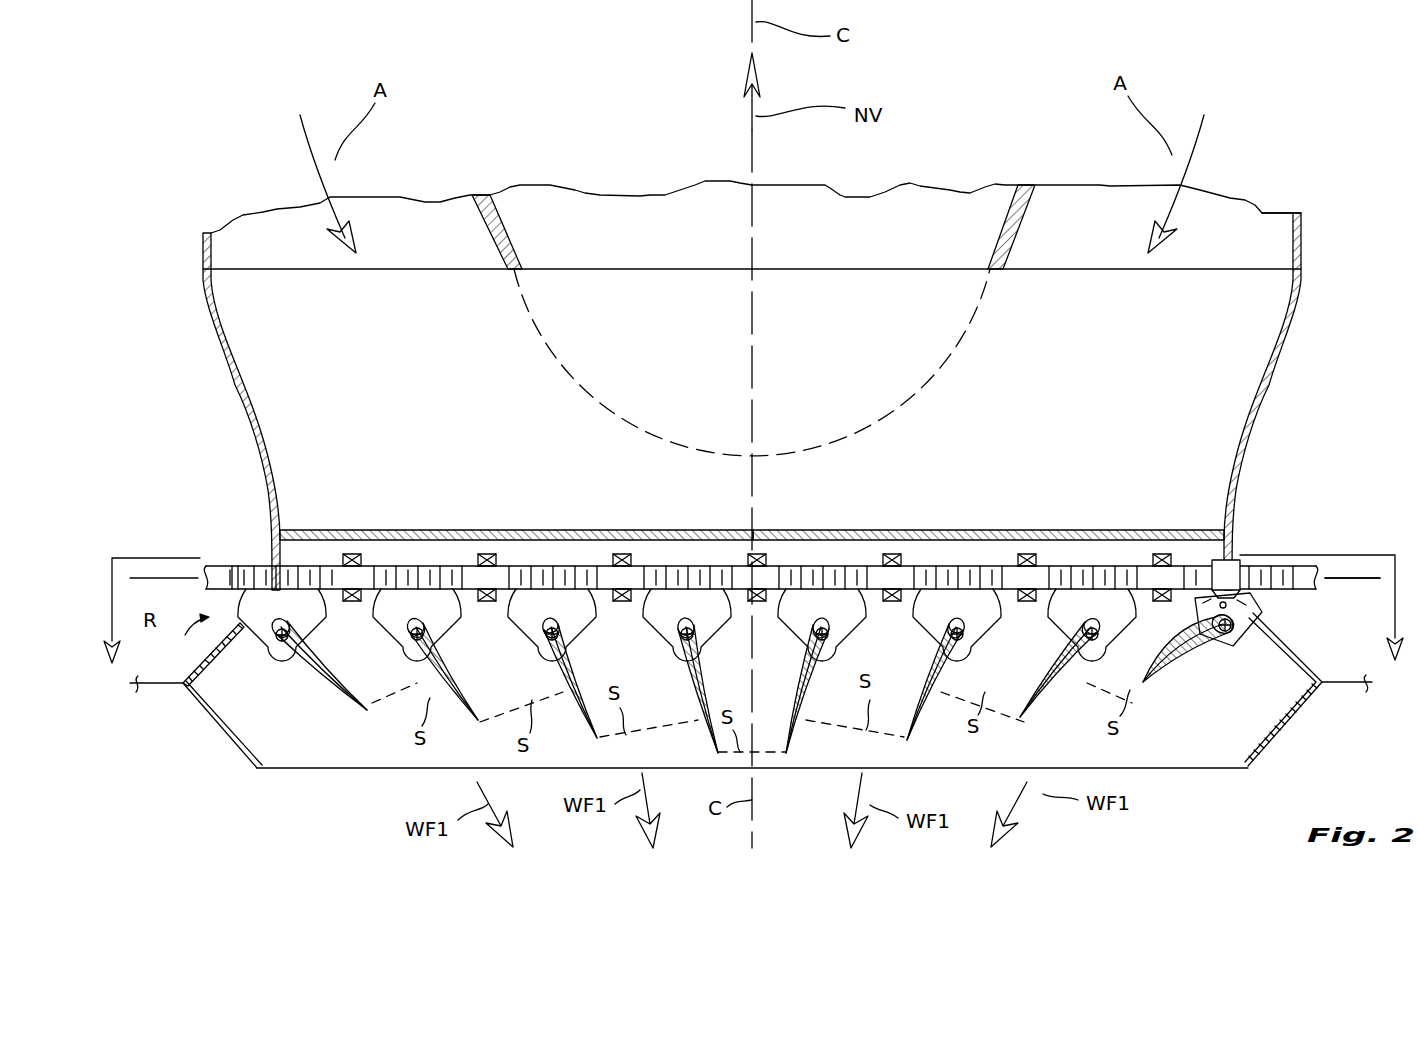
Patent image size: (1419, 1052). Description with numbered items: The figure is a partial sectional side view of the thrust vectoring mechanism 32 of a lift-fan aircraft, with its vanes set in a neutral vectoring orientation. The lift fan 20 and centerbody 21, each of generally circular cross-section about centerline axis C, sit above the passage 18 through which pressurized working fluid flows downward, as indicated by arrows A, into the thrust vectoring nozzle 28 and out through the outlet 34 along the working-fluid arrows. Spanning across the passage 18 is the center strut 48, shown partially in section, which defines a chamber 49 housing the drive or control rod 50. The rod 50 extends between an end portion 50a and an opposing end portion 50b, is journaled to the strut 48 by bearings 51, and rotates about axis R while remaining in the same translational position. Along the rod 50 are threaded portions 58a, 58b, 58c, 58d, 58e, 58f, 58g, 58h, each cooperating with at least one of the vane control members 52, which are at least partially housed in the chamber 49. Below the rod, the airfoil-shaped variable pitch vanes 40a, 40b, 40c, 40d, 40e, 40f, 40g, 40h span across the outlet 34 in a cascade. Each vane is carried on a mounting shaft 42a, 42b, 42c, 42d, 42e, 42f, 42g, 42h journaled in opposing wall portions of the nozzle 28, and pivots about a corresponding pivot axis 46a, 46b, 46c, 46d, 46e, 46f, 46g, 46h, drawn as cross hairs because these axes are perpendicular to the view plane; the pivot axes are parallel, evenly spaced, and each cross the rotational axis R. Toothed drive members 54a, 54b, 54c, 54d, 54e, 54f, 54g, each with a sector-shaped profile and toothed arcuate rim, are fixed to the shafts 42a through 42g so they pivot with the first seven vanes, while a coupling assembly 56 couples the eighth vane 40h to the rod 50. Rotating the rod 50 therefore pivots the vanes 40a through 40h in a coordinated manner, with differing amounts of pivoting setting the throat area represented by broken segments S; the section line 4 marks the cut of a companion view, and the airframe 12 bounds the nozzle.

The section line 4- 4 is at (752, 590).
The engine housing 12 is at (1345, 680).
The passage 18 is at (1268, 328).
The lift fan 20 is at (1235, 267).
The centerbody 21 is at (1008, 210).
The thrust vectoring nozzle 28 is at (1284, 742).
The thrust vectoring mechanism 32 is at (180, 640).
The outlet 34 is at (1172, 770).
The variable pitch vane 40a is at (367, 712).
The variable pitch vane 40b is at (478, 722).
The variable pitch vane 40c is at (598, 741).
The variable pitch vane 40d is at (716, 752).
The variable pitch vane 40e is at (787, 752).
The variable pitch vane 40f is at (906, 740).
The variable pitch vane 40g is at (1020, 719).
The variable pitch vane 40h is at (1143, 685).
The mounting shaft 42a is at (275, 640).
The mounting shaft 42b is at (410, 636).
The mounting shaft 42c is at (545, 636).
The mounting shaft 42d is at (680, 636).
The mounting shaft 42e is at (815, 636).
The mounting shaft 42f is at (950, 634).
The mounting shaft 42g is at (1085, 634).
The mounting shaft 42h is at (1227, 633).
The pivot axis 46a is at (280, 648).
The pivot axis 46b is at (420, 645).
The pivot axis 46c is at (557, 645).
The pivot axis 46d is at (692, 645).
The pivot axis 46e is at (812, 645).
The pivot axis 46f is at (952, 645).
The pivot axis 46g is at (1085, 645).
The pivot axis 46h is at (1216, 635).
The center strut 48 is at (365, 530).
The chamber 49 is at (1132, 530).
The drive or control rod 50 is at (1252, 559).
The end portion 50a is at (1258, 583).
The end portion 50b is at (215, 565).
The bearings 51 is at (351, 553).
The vane control members 52 is at (305, 655).
The toothed drive member 54a is at (282, 625).
The toothed drive member 54b is at (417, 625).
The toothed drive member 54c is at (552, 625).
The toothed drive member 54d is at (687, 625).
The toothed drive member 54e is at (822, 625).
The toothed drive member 54f is at (957, 625).
The toothed drive member 54g is at (1092, 625).
The coupling assembly 56 is at (1242, 627).
The threaded portion 58a is at (253, 565).
The threaded portion 58b is at (443, 565).
The threaded portion 58c is at (578, 565).
The threaded portion 58d is at (713, 565).
The threaded portion 58e is at (848, 565).
The threaded portion 58f is at (983, 565).
The threaded portion 58g is at (1086, 565).
The threaded portion 58h is at (1262, 575).